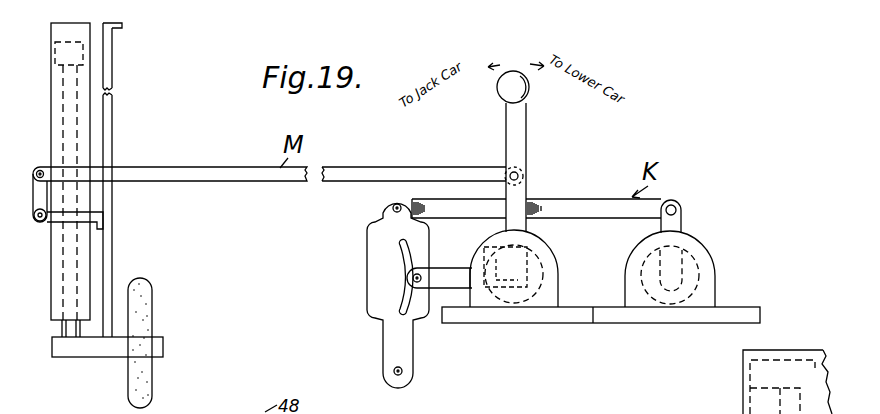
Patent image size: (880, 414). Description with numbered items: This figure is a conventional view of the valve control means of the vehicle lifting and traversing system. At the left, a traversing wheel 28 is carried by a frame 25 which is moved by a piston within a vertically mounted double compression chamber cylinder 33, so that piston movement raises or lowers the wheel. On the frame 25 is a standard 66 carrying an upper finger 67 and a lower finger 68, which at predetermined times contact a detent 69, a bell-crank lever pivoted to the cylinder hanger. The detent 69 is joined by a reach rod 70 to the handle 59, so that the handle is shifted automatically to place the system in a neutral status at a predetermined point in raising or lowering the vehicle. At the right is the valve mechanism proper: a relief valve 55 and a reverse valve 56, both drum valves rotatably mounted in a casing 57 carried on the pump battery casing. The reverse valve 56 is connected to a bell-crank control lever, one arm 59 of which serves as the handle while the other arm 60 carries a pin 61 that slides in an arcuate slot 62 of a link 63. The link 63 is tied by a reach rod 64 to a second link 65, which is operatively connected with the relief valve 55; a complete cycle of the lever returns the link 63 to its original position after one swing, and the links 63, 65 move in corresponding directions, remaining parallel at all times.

The frame 25 is at (108, 350).
The traversing wheel 28 is at (143, 323).
The cylinder 33 is at (82, 270).
The relief valve 55 is at (695, 263).
The reverse valve 56 is at (540, 260).
The casing 57 is at (568, 318).
The handle arm 59 is at (520, 133).
The arm 60 is at (460, 257).
The pin 61 is at (413, 282).
The arcuate slot 62 is at (405, 258).
The link 63 is at (378, 243).
The reach rod 64 is at (558, 208).
The second link 65 is at (676, 224).
The standard 66 is at (108, 137).
The upper finger 67 is at (112, 26).
The lower finger 68 is at (103, 223).
The detent 69 is at (83, 216).
The reach rod 70 is at (200, 167).